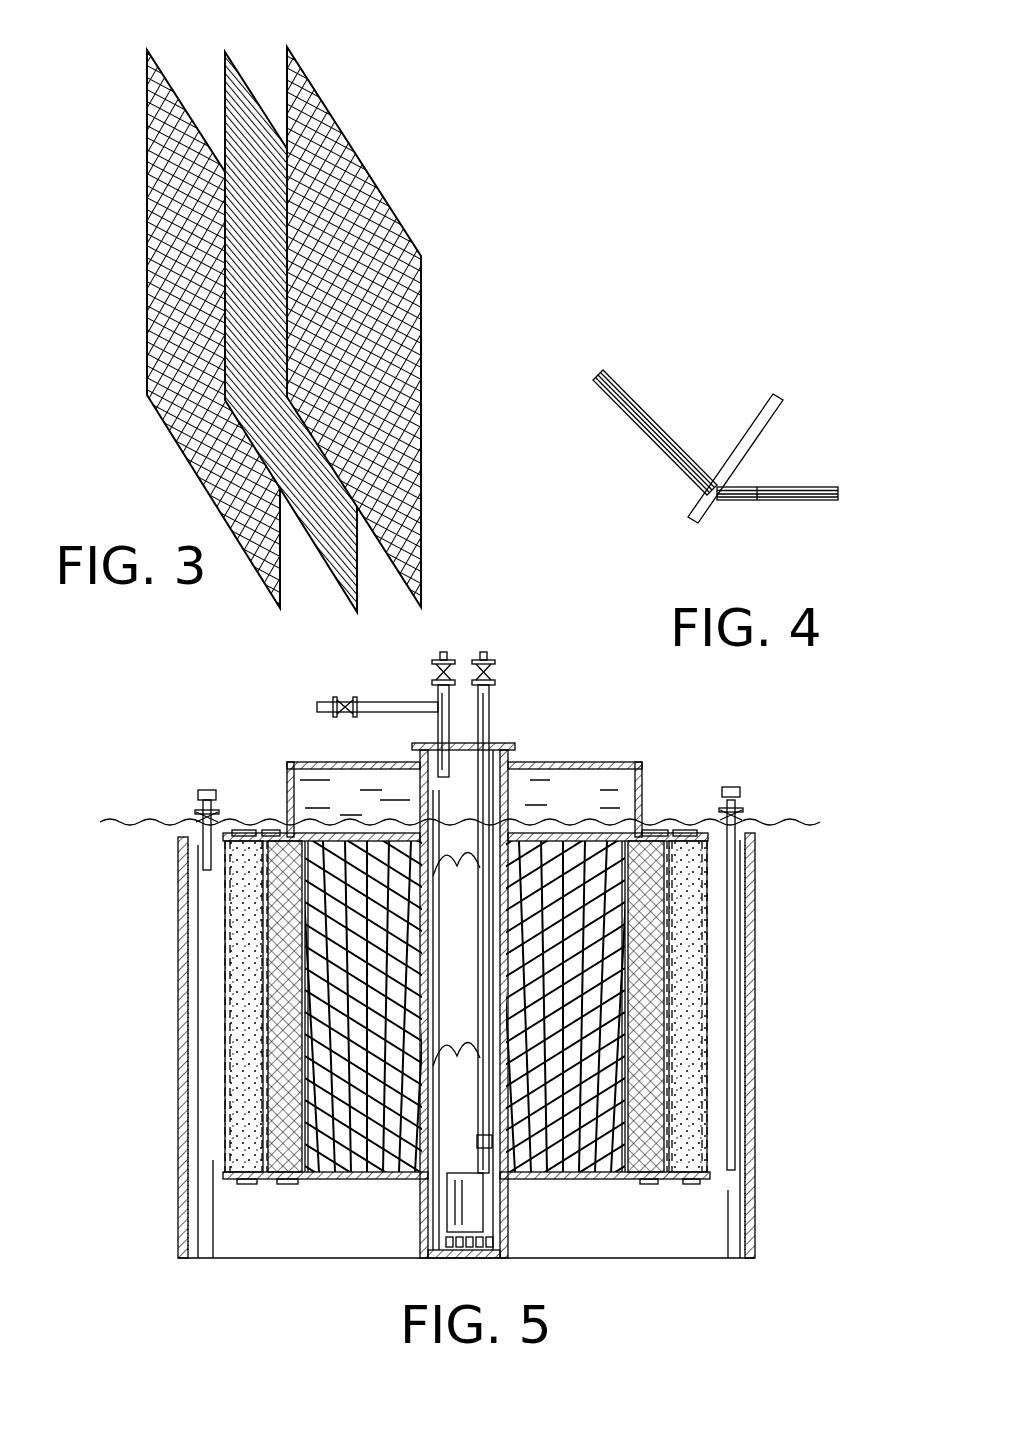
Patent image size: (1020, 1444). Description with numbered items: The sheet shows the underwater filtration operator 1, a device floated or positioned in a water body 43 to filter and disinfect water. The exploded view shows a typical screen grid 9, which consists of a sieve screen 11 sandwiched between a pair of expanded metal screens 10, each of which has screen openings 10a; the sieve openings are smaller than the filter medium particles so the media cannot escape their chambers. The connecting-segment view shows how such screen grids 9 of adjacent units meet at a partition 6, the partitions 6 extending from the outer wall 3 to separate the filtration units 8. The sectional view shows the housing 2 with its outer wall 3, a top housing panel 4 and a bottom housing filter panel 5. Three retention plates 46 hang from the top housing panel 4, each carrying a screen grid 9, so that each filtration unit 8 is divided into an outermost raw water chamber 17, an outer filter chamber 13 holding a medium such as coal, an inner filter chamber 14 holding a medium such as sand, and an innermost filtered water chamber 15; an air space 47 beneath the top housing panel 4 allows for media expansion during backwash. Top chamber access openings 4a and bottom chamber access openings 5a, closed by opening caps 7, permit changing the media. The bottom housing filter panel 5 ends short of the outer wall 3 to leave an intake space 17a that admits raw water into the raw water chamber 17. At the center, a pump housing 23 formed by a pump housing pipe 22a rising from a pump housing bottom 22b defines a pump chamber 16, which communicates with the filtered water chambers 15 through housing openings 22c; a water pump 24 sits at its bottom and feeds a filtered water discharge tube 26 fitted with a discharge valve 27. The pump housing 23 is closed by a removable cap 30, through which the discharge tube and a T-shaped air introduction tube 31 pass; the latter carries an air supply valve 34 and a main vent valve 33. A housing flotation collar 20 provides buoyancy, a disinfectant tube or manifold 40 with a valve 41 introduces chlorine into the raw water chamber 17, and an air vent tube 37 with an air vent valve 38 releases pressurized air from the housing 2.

In FIG. 5, the underwater filtration operator 1 is at (228, 708).
In FIG. 5, the housing 2 is at (470, 1045).
In FIG. 5, the outer wall 3 is at (192, 938).
In FIG. 5, the top housing panel 4 is at (330, 850).
In FIG. 5, the top chamber access openings 4a is at (220, 850).
In FIG. 5, the bottom housing filter panel 5 is at (465, 1015).
In FIG. 5, the bottom chamber access openings 5a is at (245, 1170).
In FIG. 4, the partitions 6 is at (758, 415).
In FIG. 5, the opening caps 7 is at (272, 830).
In FIG. 5, the filtration units 8 is at (176, 902).
In FIG. 3, the screen grid 9 is at (328, 84).
In FIG. 4, the screen grid 9 is at (691, 432).
In FIG. 5, the screen grid 9 is at (305, 990).
In FIG. 3, the expanded metal screens 10 is at (160, 80).
In FIG. 4, the expanded metal screens 10 is at (618, 382).
In FIG. 3, the mesh openings 10a is at (172, 272).
In FIG. 3, the sieve screen 11 is at (236, 80).
In FIG. 4, the sieve screen 11 is at (757, 500).
In FIG. 5, the outer filter chamber 13 is at (240, 1138).
In FIG. 5, the inner filter chamber 14 is at (285, 1180).
In FIG. 5, the filtered water chamber 15 is at (345, 1120).
In FIG. 5, the pump chamber 16 is at (471, 1033).
In FIG. 5, the raw water chamber 17 is at (195, 1072).
In FIG. 5, the intake space 17a is at (210, 1176).
In FIG. 5, the housing flotation collar 20 is at (585, 762).
In FIG. 5, the pump housing pipe 22a is at (457, 881).
In FIG. 5, the pump housing bottom 22b is at (490, 1256).
In FIG. 5, the housing openings 22c is at (456, 1073).
In FIG. 5, the pump housing 23 is at (515, 1252).
In FIG. 5, the water pump 24 is at (485, 1215).
In FIG. 5, the filtered water discharge tube 26 is at (499, 809).
In FIG. 5, the discharge valve 27 is at (492, 686).
In FIG. 5, the cap 30 is at (412, 748).
In FIG. 5, the air introduction tube 31 is at (345, 681).
In FIG. 5, the main vent valve 33 is at (452, 655).
In FIG. 5, the air supply valve 34 is at (345, 697).
In FIG. 5, the air vent tube 37 is at (167, 809).
In FIG. 5, the air vent valve 38 is at (200, 797).
In FIG. 5, the disinfectant tube or manifold 40 is at (740, 858).
In FIG. 5, the valve 41 is at (742, 800).
In FIG. 5, the water body 43 is at (690, 830).
In FIG. 5, the retention plates 46 is at (235, 846).
In FIG. 5, the air space 47 is at (305, 846).